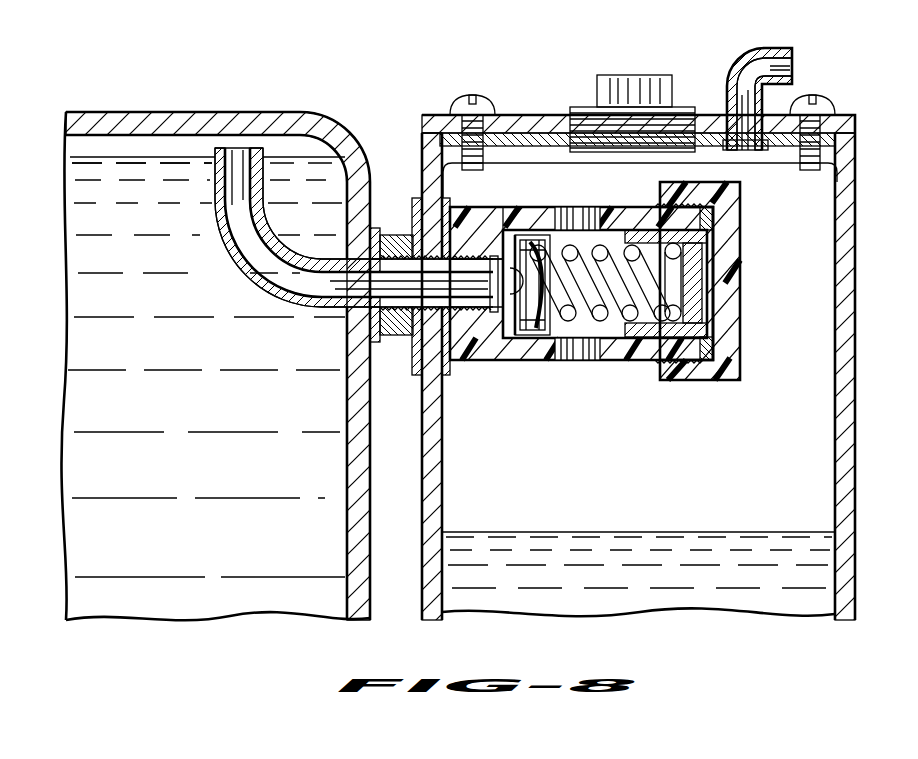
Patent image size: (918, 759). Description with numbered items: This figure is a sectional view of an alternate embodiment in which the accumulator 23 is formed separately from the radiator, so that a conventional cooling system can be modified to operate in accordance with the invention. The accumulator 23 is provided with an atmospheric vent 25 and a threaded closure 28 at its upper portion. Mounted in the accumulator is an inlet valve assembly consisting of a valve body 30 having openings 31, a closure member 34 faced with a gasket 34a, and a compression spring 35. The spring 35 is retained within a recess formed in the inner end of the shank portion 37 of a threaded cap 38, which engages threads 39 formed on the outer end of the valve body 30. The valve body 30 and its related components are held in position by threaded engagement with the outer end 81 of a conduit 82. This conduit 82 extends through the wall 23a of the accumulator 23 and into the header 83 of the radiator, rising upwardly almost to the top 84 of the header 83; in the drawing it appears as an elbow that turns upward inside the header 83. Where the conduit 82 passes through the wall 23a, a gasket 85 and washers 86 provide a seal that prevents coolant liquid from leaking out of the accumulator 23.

The accumulator 23 is at (822, 473).
The wall 23a is at (422, 505).
The atmospheric vent 25 is at (760, 48).
The threaded closure 28 is at (595, 95).
The valve body 30 is at (488, 360).
The openings 31 is at (582, 207).
The closure member 34 is at (540, 335).
The gasket 34a is at (520, 335).
The compression spring 35 is at (612, 320).
The shank portion 37 is at (656, 337).
The threaded cap 38 is at (740, 287).
The threads 39 is at (680, 185).
The outer end 81 is at (478, 250).
The conduit 82 is at (300, 310).
The header 83 is at (280, 612).
The top 84 is at (255, 112).
The gasket 85 is at (393, 235).
The washers 86 is at (412, 200).